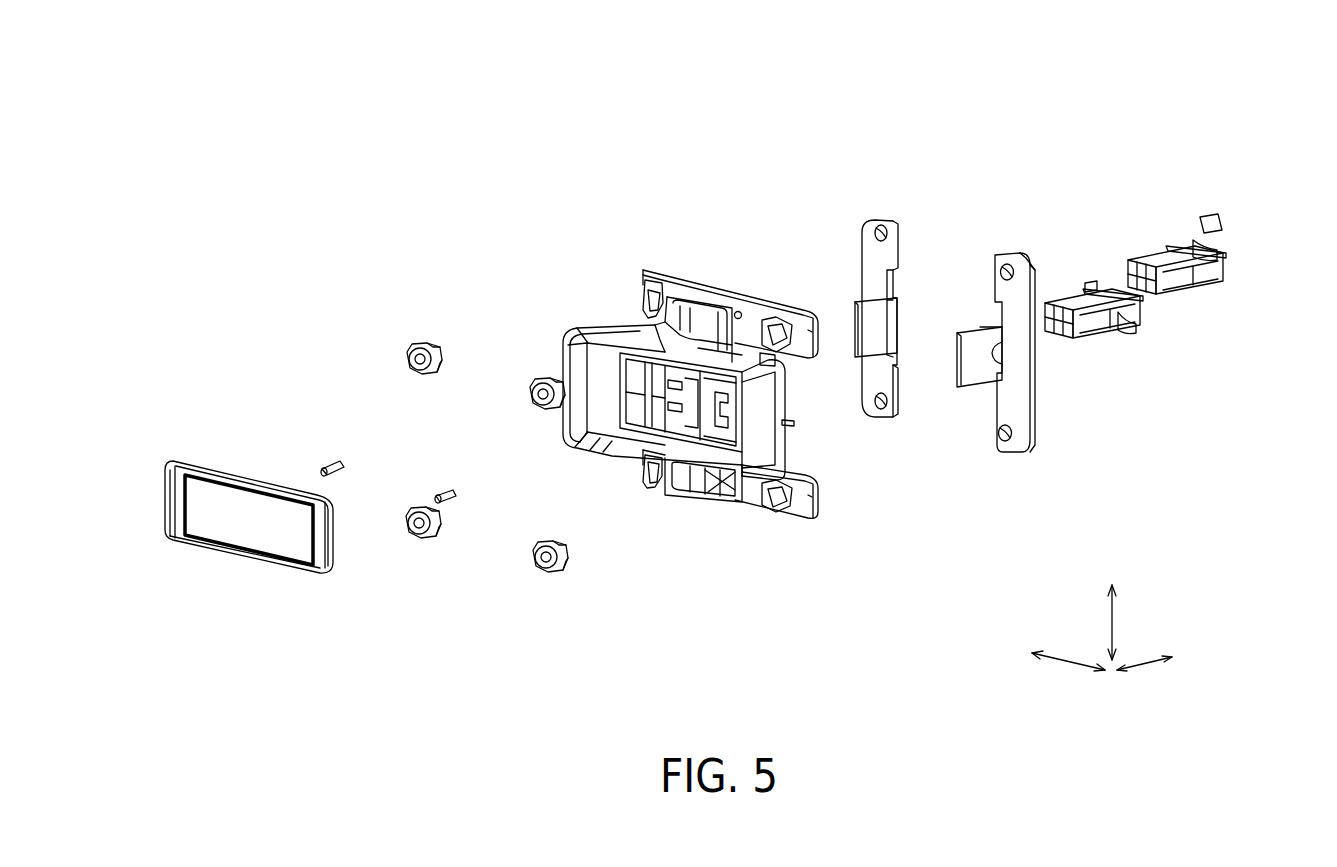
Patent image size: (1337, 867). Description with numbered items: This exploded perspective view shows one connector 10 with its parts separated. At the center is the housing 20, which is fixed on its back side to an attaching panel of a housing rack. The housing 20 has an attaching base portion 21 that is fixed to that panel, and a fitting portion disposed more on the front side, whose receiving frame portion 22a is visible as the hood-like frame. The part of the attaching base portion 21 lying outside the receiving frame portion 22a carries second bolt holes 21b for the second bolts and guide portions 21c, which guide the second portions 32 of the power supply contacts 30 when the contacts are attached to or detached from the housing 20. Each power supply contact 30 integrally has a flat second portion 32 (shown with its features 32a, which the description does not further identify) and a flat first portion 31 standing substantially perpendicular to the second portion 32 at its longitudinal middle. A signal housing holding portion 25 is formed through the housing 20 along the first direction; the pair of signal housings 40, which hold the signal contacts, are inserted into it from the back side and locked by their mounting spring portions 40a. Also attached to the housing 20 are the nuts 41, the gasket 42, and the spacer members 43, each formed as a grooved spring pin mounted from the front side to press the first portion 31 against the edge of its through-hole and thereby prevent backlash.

The connector 10 is at (344, 108).
The housing 20 is at (610, 240).
The attaching base portion 21 is at (742, 505).
The second bolt holes 21b is at (655, 281).
The guide portions 21c is at (800, 345).
The receiving frame portion 22a is at (652, 354).
The signal housing holding portion 25 is at (695, 352).
The power supply contacts 30 is at (870, 125).
The first portion 31 is at (878, 330).
The second portion 32 is at (958, 334).
The bracket hole 32a is at (876, 226).
The signal housings 40 is at (1165, 312).
The mounting spring portions 40a is at (1137, 333).
The nuts 41 is at (427, 344).
The gasket 42 is at (322, 578).
The spacer members 43 is at (330, 460).